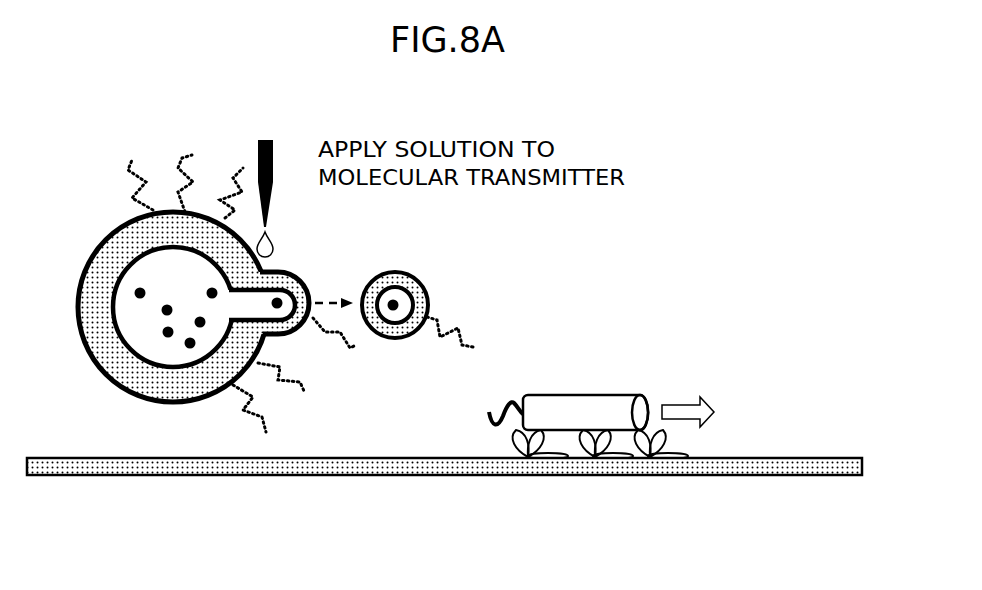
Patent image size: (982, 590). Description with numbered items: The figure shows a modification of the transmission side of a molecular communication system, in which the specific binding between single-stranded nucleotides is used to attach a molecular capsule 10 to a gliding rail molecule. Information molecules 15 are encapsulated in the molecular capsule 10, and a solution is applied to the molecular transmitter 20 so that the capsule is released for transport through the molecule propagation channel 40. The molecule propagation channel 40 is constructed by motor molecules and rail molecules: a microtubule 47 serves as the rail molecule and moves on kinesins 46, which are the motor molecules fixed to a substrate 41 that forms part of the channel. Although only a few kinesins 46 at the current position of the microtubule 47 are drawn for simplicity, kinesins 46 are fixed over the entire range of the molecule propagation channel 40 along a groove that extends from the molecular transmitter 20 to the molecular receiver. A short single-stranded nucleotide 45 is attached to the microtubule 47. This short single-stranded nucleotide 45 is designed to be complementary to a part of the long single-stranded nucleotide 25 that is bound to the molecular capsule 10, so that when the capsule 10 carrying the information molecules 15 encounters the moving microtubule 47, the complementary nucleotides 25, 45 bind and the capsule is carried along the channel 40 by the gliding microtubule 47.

The molecular capsule 10 is at (427, 289).
The information molecules 15 is at (144, 292).
The molecular transmitter 20 is at (97, 280).
The long single-stranded nucleotide 25 is at (196, 168).
The molecule propagation channel 40 is at (686, 234).
The substrate 41 is at (125, 476).
The short single-stranded nucleotide 45 is at (509, 400).
The kinesins 46 is at (512, 440).
The microtubule 47 is at (607, 394).